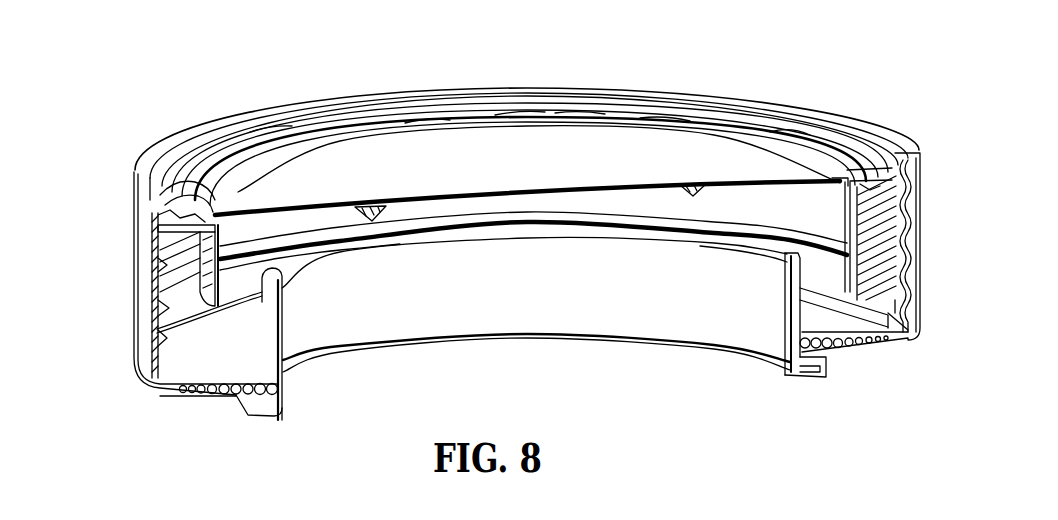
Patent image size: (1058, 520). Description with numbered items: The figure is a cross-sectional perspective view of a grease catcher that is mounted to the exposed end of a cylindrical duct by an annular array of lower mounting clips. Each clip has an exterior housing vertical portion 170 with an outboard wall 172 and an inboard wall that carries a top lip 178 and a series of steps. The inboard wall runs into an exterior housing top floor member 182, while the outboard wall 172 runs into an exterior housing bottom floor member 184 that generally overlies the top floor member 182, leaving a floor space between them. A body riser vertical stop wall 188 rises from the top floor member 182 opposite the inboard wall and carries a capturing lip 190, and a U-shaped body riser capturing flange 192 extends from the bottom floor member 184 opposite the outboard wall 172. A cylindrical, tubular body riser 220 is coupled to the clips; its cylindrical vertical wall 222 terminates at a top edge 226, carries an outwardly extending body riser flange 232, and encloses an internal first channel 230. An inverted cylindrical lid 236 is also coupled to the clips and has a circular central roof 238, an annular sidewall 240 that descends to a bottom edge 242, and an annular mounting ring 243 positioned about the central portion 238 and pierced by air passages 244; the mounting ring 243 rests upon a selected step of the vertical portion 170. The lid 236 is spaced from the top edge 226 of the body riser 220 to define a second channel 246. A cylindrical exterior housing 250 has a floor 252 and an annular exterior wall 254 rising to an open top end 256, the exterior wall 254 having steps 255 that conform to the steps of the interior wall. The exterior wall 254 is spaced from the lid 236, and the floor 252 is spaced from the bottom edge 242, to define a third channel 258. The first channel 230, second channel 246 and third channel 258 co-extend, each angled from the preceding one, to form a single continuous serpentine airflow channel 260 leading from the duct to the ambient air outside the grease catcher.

The exterior housing vertical portion 170 is at (893, 294).
The outboard wall 172 is at (921, 168).
The top lip 178 is at (890, 143).
The exterior housing top floor member 182 is at (867, 328).
The exterior housing bottom floor member 184 is at (862, 322).
The body riser vertical stop wall 188 is at (795, 330).
The capturing lip 190 is at (783, 256).
The U-shaped body riser capturing flange 192 is at (810, 377).
The body riser 220 is at (388, 331).
The body riser vertical wall 222 is at (475, 326).
The body riser top edge 226 is at (312, 244).
The first channel 230 is at (569, 314).
The body riser flange 232 is at (817, 376).
The lid 236 is at (503, 132).
The central portion 238 is at (511, 173).
The annular sidewall 240 is at (273, 285).
The bottom edge 242 is at (205, 306).
The mounting ring 243 is at (177, 187).
The air passages 244 is at (227, 153).
The second channel 246 is at (832, 265).
The exterior housing 250 is at (143, 293).
The floor 252 is at (225, 397).
The exterior wall 254 is at (158, 330).
The steps 255 is at (282, 300).
The open top end 256 is at (698, 115).
The third channel 258 is at (841, 172).
The airflow channel 260 is at (866, 186).